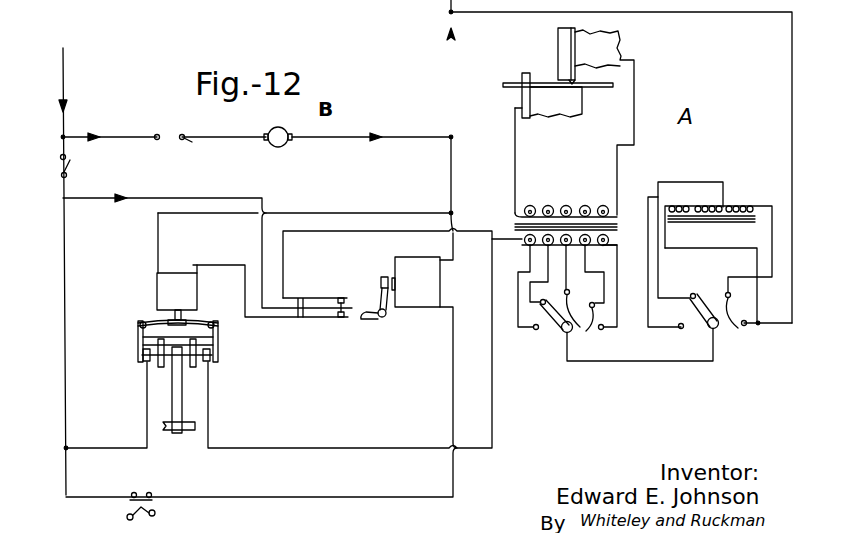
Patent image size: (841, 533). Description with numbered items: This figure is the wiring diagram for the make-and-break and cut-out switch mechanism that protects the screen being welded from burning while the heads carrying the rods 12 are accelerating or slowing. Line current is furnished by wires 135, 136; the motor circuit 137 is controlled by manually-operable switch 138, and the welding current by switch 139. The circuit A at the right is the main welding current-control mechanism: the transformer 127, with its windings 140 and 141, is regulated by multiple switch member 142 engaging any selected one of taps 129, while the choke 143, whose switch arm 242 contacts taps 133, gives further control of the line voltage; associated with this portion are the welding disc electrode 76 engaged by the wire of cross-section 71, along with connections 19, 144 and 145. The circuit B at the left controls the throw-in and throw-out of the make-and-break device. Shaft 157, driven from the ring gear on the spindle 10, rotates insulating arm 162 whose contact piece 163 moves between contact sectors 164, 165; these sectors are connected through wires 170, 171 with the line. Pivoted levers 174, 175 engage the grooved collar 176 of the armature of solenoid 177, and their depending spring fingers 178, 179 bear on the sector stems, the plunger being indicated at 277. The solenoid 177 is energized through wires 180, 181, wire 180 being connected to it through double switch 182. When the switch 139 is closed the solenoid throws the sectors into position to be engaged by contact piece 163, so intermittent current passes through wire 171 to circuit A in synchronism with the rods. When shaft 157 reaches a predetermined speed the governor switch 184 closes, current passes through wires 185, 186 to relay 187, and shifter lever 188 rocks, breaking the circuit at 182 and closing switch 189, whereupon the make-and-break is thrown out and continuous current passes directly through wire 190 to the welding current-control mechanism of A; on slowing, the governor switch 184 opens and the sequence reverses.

The spindle 10 is at (338, 6).
The rods 12 is at (600, 88).
The post 19 is at (522, 96).
The wire cross-section 71 is at (577, 80).
The welding disc electrode 76 is at (558, 46).
The transformer 127 is at (564, 206).
The taps 129 is at (536, 330).
The taps 133 is at (683, 330).
The line conductor 135 is at (63, 88).
The line conductor 136 is at (451, 5).
The motor circuit 137 is at (251, 136).
The manually-operable switch 138 is at (166, 134).
The manually-operable switch 139 is at (68, 172).
The transformer winding 140 is at (608, 243).
The transformer winding 141 is at (602, 206).
The multiple switch member 142 is at (556, 315).
The choke 143 is at (738, 205).
The conductor 144 is at (634, 106).
The conductor 145 is at (517, 150).
The shaft 157 is at (190, 432).
The insulating arm 162 is at (181, 398).
The contact piece 163 is at (140, 342).
The contact sector 164 is at (213, 345).
The contact sector 165 is at (170, 338).
The wire 170 is at (147, 388).
The wire 171 is at (208, 399).
The lever 174 is at (196, 326).
The lever 175 is at (155, 323).
The grooved collar 176 is at (183, 320).
The solenoid 177 is at (157, 281).
The spring finger 178 is at (212, 355).
The spring finger 179 is at (142, 356).
The wire 180 is at (193, 198).
The wire 181 is at (342, 213).
The double switch 182 is at (329, 322).
The governor switch 184 is at (156, 513).
The wire 185 is at (453, 382).
The wire 186 is at (456, 219).
The relay 187 is at (425, 268).
The shifter lever 188 is at (380, 283).
The switch 189 is at (328, 297).
The wire 190 is at (325, 233).
The switch arm 242 is at (700, 291).
The plunger 277 is at (170, 319).